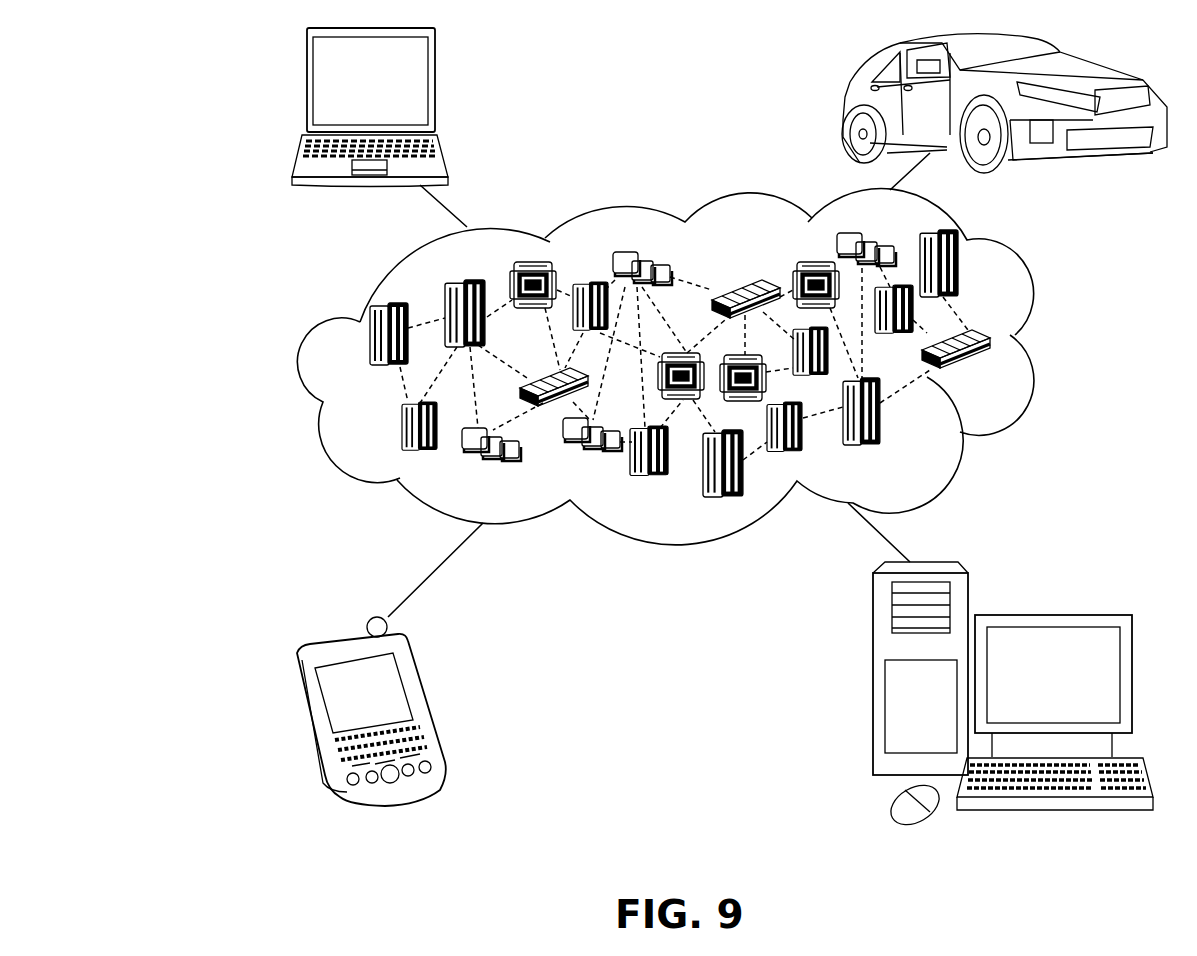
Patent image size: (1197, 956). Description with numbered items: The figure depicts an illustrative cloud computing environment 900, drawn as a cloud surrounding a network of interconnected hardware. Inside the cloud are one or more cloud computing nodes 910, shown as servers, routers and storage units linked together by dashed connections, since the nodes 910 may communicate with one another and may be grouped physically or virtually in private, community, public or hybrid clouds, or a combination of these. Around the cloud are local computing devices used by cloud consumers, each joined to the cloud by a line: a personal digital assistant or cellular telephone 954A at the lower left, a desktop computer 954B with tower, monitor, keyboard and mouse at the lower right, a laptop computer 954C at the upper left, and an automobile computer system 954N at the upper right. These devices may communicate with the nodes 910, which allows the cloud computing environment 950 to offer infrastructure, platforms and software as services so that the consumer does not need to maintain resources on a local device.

The cloud computing environment 900 is at (152, 63).
The cloud computing environment 950 is at (1048, 340).
The cloud computing nodes 910 is at (992, 372).
The laptop computer 954C is at (434, 92).
The automobile computer system 954N is at (843, 105).
The personal digital assistant (PDA) or cellular telephone 954A is at (427, 703).
The desktop computer 954B is at (1050, 613).